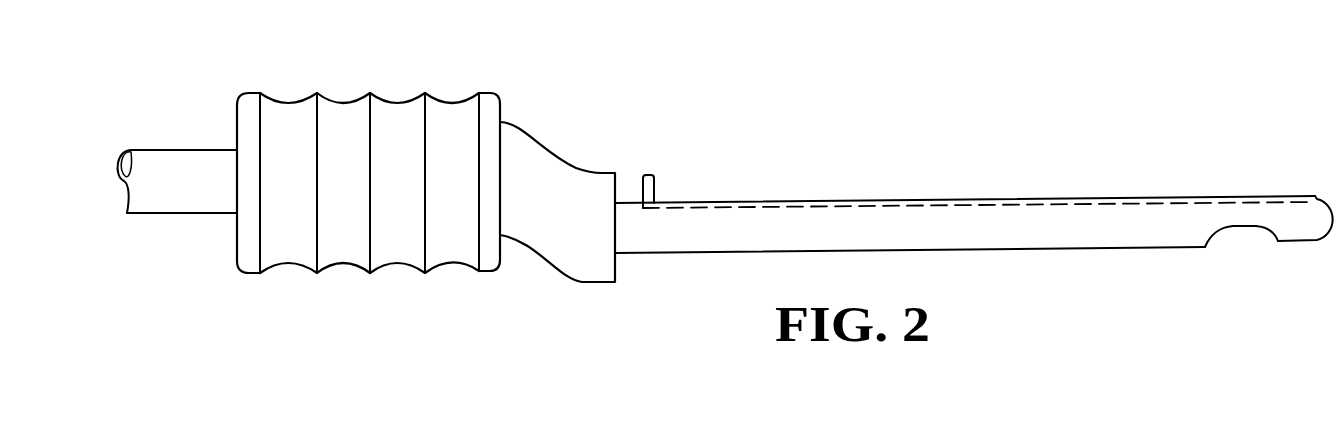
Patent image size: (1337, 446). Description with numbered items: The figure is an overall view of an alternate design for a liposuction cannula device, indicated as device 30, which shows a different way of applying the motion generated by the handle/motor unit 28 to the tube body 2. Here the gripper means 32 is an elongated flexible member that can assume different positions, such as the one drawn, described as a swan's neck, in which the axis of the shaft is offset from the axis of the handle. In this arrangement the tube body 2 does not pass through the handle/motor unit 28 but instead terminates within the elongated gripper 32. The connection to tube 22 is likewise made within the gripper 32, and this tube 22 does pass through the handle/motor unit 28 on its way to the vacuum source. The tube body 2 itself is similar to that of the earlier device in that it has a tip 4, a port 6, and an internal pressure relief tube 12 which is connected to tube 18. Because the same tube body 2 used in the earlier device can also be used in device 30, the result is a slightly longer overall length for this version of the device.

The tube body 2 is at (962, 200).
The tip 4 is at (1311, 243).
The port 6 is at (1246, 228).
The internal pressure relief tube 12 is at (772, 205).
The tube 18 is at (636, 186).
The tube 22 is at (180, 150).
The handle/motor unit 28 is at (392, 100).
The device 30 is at (612, 95).
The gripper means 32 is at (540, 142).